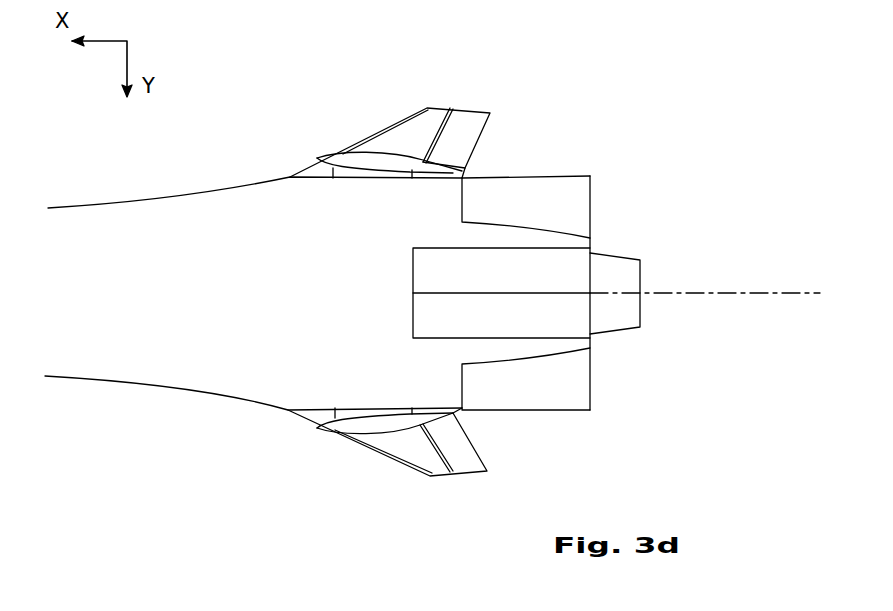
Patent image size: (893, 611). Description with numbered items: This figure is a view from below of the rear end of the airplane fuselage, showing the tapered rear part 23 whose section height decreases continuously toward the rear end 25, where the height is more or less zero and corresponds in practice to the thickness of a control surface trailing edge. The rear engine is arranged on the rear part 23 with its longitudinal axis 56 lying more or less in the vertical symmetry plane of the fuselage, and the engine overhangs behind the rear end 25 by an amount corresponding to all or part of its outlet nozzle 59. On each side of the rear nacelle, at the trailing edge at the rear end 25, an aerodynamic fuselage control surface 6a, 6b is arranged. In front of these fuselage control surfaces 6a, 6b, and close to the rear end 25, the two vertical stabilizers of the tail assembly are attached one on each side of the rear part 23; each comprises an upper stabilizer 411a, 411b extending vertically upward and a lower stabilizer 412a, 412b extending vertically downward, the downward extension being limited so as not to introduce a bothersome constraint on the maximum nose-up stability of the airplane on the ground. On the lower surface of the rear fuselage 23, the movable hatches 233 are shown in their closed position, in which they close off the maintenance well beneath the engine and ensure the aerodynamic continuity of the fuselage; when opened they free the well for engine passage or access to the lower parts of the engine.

The tapered rear part 23 is at (185, 220).
The upper stabilizer 411b is at (413, 130).
The lower stabilizer 412b is at (343, 163).
The fuselage control surface 6b is at (522, 193).
The movable hatches 233 is at (573, 262).
The rear end 25 is at (593, 380).
The outlet nozzle 59 is at (623, 273).
The longitudinal axis 56 is at (727, 294).
The fuselage control surface 6a is at (543, 397).
The upper stabilizer 411a is at (408, 450).
The lower stabilizer 412a is at (333, 427).